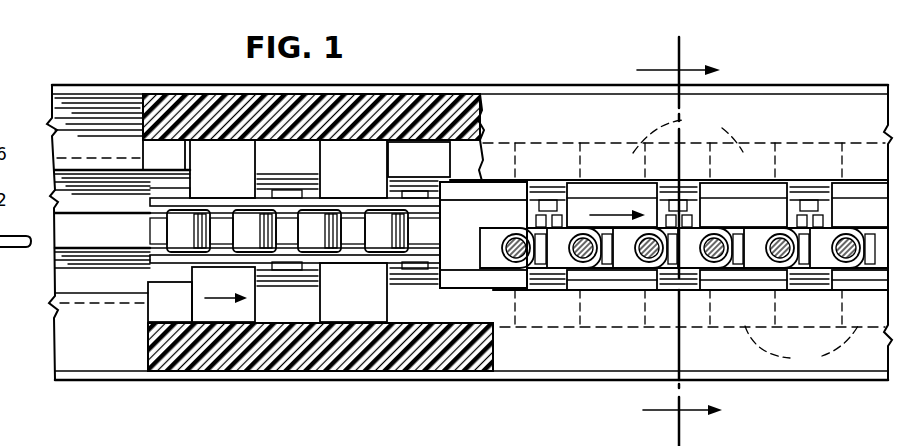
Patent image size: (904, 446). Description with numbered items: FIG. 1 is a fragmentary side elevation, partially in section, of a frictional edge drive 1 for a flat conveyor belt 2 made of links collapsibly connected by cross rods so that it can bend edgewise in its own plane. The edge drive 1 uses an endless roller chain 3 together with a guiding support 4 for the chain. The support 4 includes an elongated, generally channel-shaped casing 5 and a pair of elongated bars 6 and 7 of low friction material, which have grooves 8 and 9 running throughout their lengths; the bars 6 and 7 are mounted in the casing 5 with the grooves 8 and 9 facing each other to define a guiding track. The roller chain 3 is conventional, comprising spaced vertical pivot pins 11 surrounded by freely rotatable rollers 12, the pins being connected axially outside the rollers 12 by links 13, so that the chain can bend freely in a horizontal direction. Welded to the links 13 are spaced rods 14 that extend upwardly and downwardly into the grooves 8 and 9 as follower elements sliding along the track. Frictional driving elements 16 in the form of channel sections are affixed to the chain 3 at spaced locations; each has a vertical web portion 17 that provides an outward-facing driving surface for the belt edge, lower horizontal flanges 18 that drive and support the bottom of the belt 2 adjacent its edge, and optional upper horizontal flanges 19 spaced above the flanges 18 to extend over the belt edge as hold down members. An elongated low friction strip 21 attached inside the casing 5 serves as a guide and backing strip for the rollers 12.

The frictional edge drive 1 is at (414, 80).
The conveyor belt 2 is at (622, 298).
The endless roller chain 3 is at (132, 266).
The guiding support 4 is at (138, 384).
The casing 5 is at (103, 220).
The bar 6 is at (205, 93).
The bar 7 is at (228, 346).
The groove 8 is at (157, 156).
The groove 9 is at (165, 309).
The pivot pins 11 is at (250, 254).
The rollers 12 is at (313, 243).
The links 13 is at (369, 200).
The rods 14 is at (240, 168).
The frictional driving elements 16 is at (472, 178).
The vertical web portion 17 is at (466, 256).
The horizontal flanges 18 is at (445, 280).
The upper horizontal flanges 19 is at (455, 183).
The strip 21 is at (85, 235).